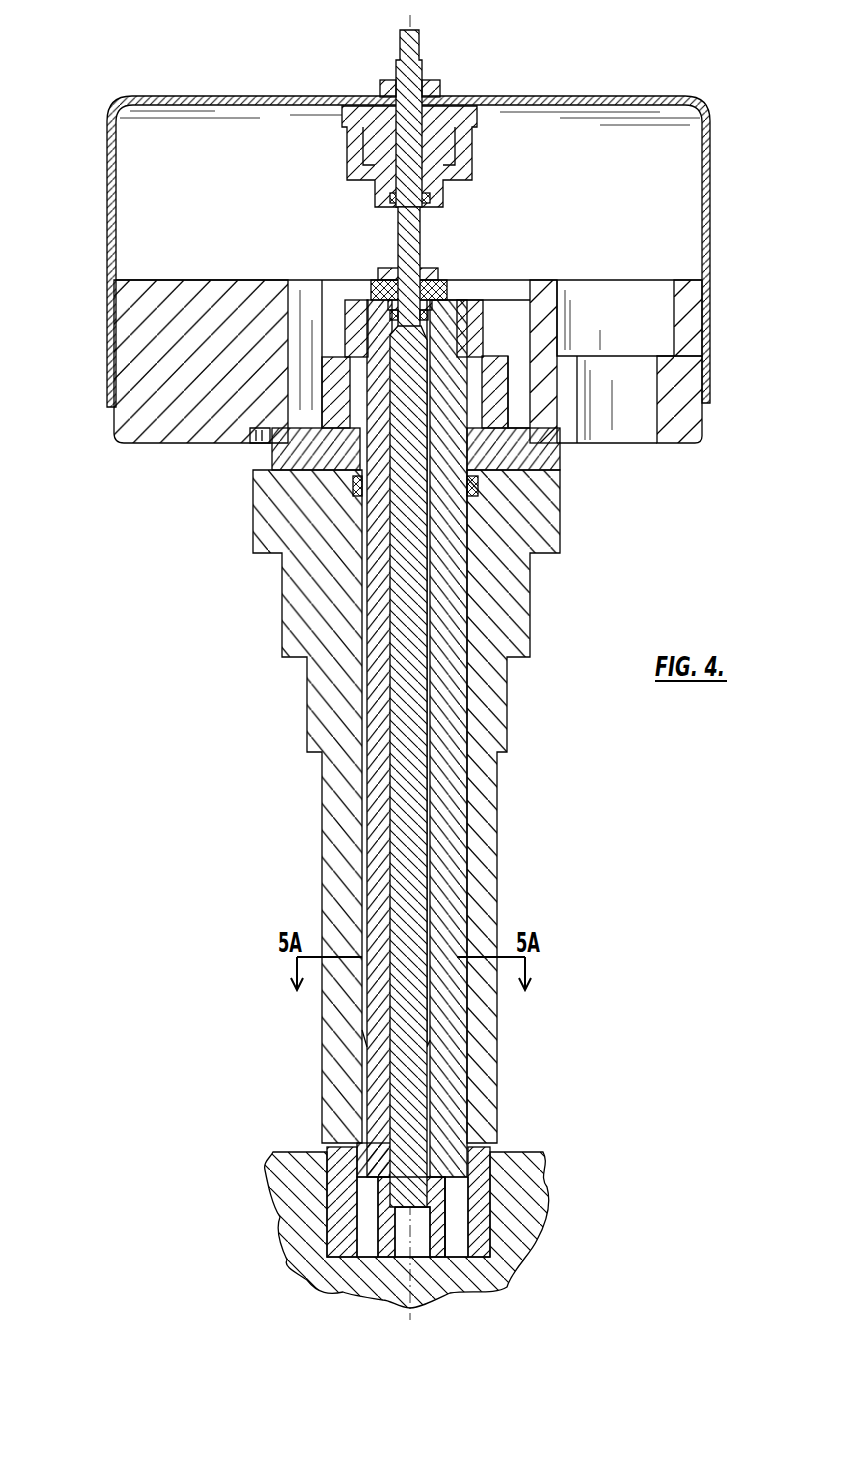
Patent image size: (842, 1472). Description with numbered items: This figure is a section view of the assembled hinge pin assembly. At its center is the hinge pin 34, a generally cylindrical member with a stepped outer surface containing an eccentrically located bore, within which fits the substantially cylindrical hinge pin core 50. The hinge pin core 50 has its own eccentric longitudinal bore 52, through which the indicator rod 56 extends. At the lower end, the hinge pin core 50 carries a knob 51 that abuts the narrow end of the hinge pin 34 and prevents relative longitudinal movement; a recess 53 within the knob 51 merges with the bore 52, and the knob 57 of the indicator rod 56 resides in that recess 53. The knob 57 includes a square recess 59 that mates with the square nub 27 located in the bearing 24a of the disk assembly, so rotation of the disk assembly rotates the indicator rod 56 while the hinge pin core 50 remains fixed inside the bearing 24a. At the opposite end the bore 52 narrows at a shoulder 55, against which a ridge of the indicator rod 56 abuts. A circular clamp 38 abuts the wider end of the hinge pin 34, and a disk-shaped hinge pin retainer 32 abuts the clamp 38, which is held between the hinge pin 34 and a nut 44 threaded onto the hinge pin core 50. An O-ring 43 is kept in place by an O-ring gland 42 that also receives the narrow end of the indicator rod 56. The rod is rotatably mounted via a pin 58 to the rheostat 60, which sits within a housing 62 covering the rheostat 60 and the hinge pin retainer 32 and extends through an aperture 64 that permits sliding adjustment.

The housing 62 is at (712, 170).
The aperture 64 is at (432, 82).
The rheostat 60 is at (472, 152).
The pin 58 is at (392, 207).
The nut 44 is at (436, 272).
The O-ring 43 is at (440, 290).
The O-ring gland 42 is at (440, 306).
The shoulder 55 is at (428, 320).
The hinge pin retainer 32 is at (197, 443).
The circular clamp 38 is at (557, 460).
The knob 57 is at (478, 486).
The hinge pin 34 is at (510, 626).
The hinge pin core 50 is at (455, 811).
The longitudinal bore 52 is at (432, 1010).
The indicator rod 56 is at (420, 1050).
The knob 51 is at (483, 1152).
The recess 53 is at (457, 1228).
The square recess 59 is at (457, 1215).
The nub 27 is at (410, 1235).
The bearing 24a is at (322, 1232).